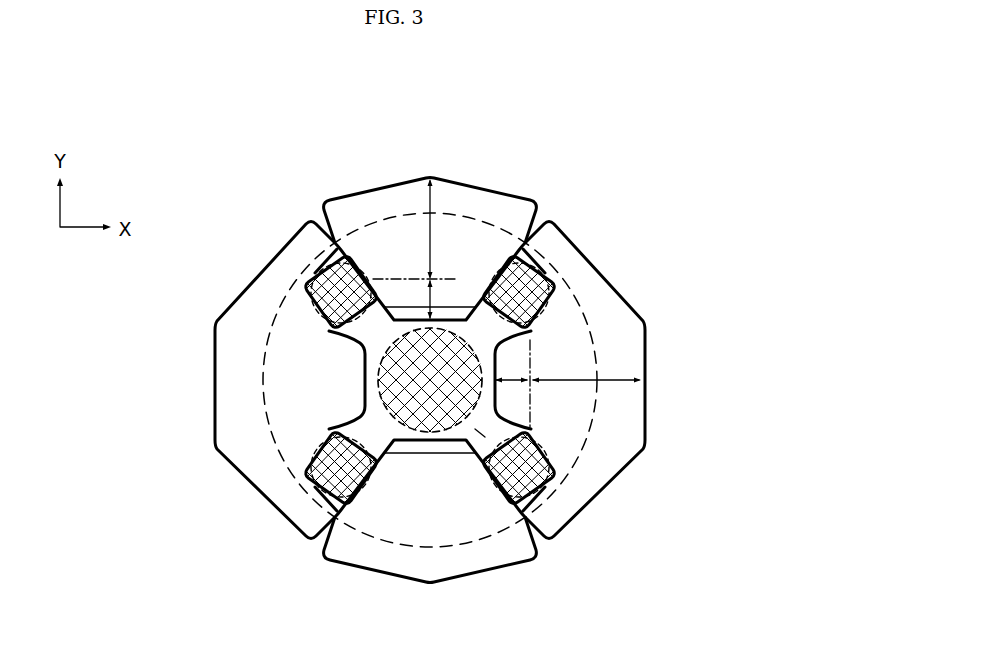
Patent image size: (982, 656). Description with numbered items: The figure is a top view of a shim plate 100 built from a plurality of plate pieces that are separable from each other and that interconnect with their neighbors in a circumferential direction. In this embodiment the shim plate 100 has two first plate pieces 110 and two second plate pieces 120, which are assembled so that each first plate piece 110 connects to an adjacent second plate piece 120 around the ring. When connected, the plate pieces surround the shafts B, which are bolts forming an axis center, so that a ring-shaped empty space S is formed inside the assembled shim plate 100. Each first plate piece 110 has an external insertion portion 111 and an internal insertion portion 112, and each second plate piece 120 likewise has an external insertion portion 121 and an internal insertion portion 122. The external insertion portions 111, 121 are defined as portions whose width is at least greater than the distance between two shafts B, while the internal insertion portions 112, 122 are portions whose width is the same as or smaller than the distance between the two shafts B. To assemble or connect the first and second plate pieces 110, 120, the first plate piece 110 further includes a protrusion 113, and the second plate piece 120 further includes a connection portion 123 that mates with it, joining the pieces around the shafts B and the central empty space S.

The shim plate 100 is at (299, 122).
The first plate piece 110 is at (568, 141).
The external insertion portion 111 is at (430, 225).
The internal insertion portion 112 is at (431, 300).
The protrusion 113 is at (530, 357).
The second plate piece 120 is at (262, 252).
The external insertion portion 121 is at (585, 389).
The internal insertion portion 122 is at (533, 400).
The connection portion 123 is at (553, 510).
The shaft B is at (357, 280).
The empty space S is at (480, 434).